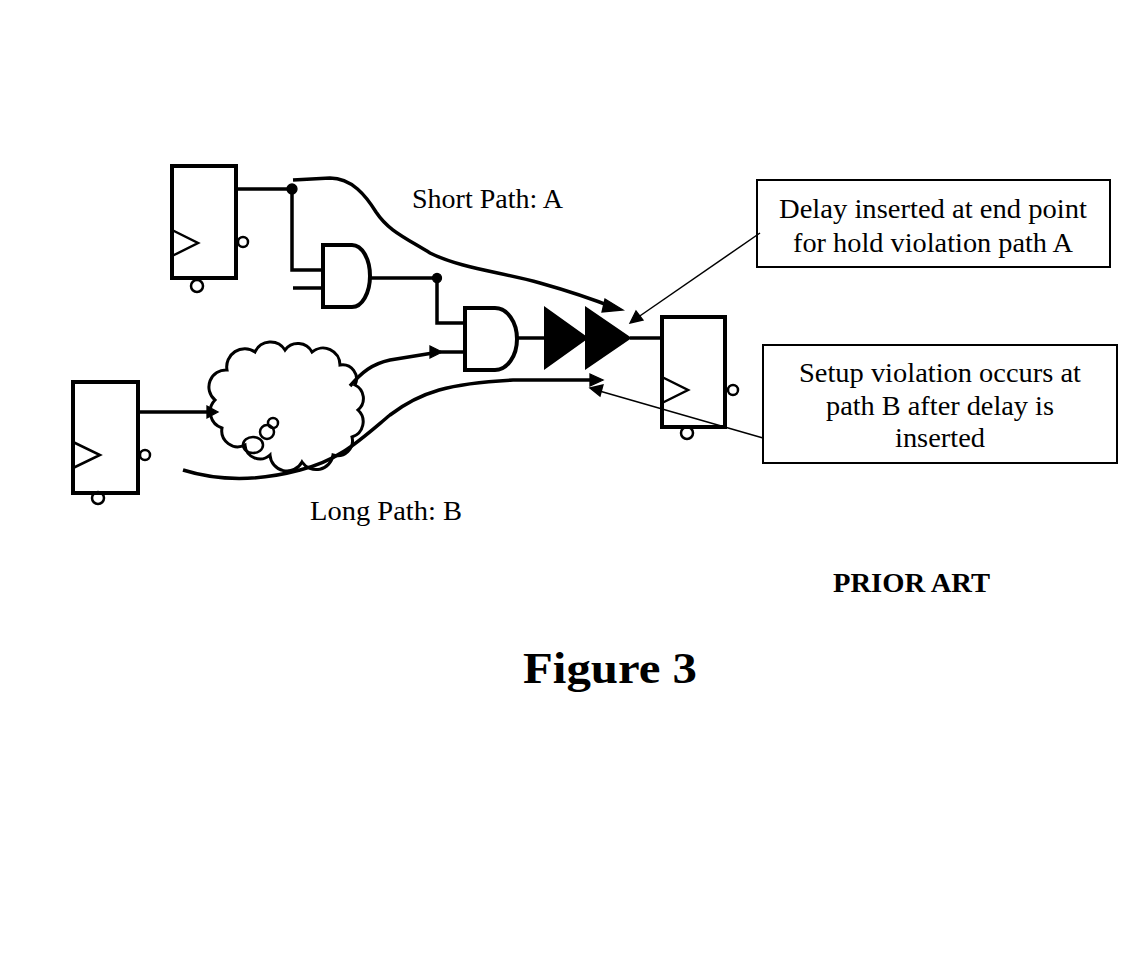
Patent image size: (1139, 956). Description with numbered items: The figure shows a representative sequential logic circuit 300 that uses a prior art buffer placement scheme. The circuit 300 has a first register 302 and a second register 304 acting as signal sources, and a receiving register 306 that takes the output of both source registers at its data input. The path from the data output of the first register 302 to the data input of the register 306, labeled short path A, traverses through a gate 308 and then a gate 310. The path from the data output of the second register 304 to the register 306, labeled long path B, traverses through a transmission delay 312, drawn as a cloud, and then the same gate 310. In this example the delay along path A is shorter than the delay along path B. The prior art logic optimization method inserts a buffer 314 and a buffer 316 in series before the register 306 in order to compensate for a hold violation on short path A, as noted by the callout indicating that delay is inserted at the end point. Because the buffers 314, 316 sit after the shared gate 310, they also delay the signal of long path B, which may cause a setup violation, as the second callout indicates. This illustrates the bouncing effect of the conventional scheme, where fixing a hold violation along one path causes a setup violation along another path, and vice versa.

The sequential logic circuit 300 is at (238, 63).
The first register 302 is at (216, 164).
The second register 304 is at (127, 365).
The register 306 is at (745, 302).
The gate 308 is at (364, 246).
The gate 310 is at (503, 308).
The transmission delay 312 is at (303, 398).
The buffer 314 is at (601, 310).
The buffer 316 is at (560, 310).